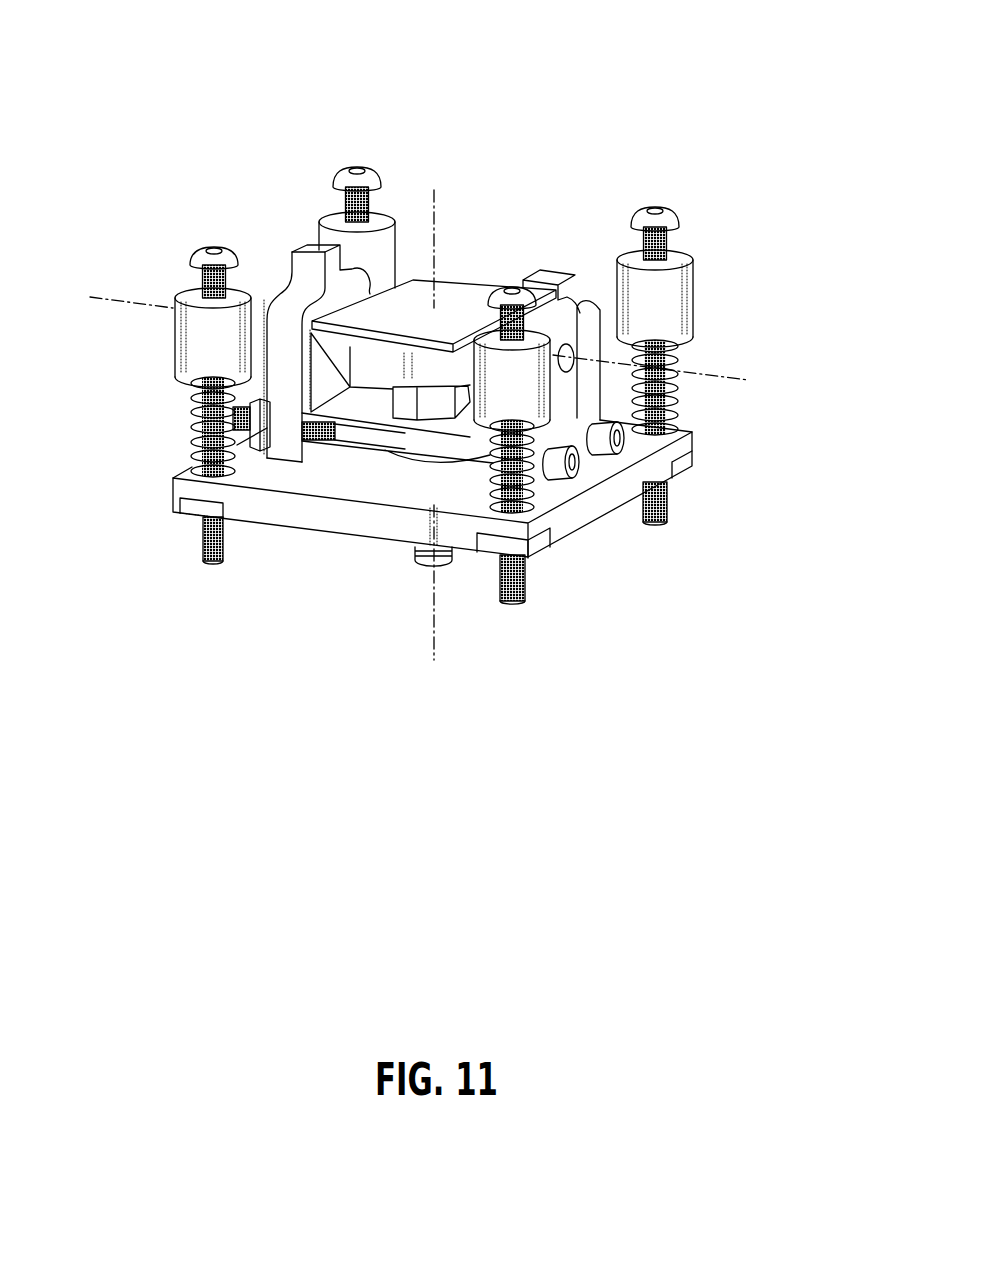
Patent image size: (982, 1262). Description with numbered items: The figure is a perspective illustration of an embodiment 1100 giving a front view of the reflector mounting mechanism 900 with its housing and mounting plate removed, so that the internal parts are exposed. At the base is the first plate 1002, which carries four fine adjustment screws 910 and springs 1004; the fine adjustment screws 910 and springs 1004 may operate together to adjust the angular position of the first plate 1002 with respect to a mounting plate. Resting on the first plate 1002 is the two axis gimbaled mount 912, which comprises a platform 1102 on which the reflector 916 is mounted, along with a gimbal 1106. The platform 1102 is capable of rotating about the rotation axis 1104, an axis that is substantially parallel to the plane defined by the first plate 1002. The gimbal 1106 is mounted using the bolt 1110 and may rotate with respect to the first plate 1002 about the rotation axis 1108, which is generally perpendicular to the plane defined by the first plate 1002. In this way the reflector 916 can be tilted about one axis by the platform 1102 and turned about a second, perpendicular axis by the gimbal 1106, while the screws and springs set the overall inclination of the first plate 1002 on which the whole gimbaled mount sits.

The reflector mounting mechanism 900 is at (442, 367).
The fine adjustment screws 910 is at (373, 170).
The two axis gimbaled mount 912 is at (330, 303).
The reflector 916 is at (458, 298).
The first plate 1002 is at (302, 512).
The springs 1004 is at (678, 356).
The embodiment 1100 is at (442, 441).
The platform 1102 is at (328, 347).
The rotation axis 1104 is at (150, 306).
The gimbal 1106 is at (284, 376).
The rotation axis 1108 is at (437, 610).
The bolt 1110 is at (407, 408).